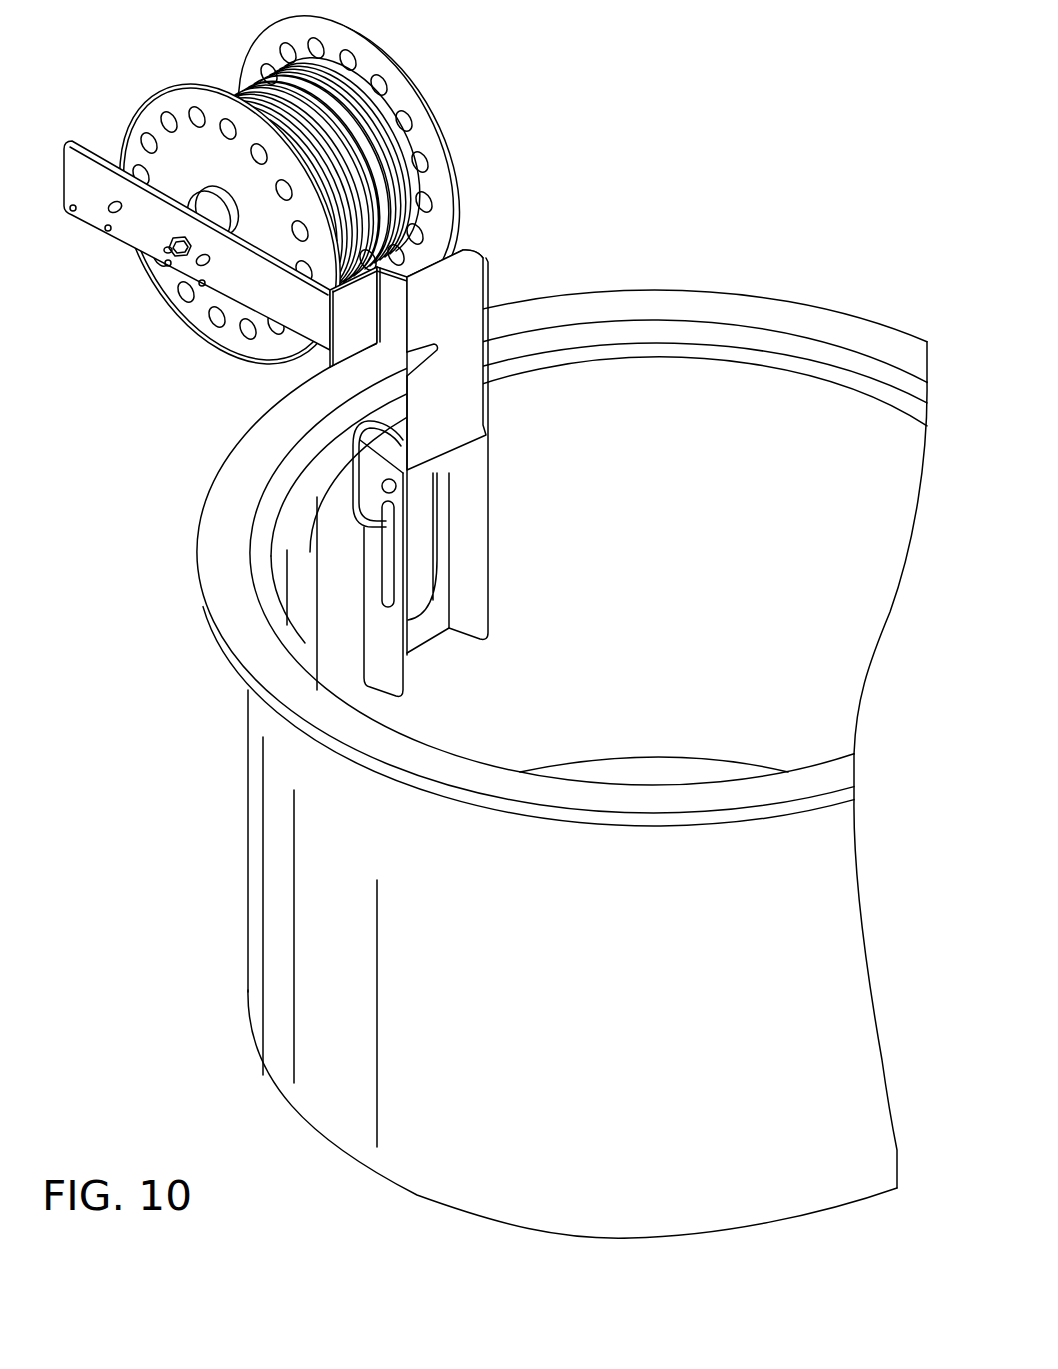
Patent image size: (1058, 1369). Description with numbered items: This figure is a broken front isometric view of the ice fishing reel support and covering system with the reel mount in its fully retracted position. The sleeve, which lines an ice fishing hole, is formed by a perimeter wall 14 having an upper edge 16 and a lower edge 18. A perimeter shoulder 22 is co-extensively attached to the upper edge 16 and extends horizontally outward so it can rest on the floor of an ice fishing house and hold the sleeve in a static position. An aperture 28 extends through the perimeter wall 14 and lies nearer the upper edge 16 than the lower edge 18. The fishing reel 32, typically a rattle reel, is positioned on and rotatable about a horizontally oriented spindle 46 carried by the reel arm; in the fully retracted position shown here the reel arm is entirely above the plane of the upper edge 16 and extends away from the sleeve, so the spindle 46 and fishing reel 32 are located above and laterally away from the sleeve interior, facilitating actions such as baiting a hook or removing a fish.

The perimeter wall 14 is at (247, 852).
The upper edge 16 is at (740, 298).
The lower edge 18 is at (418, 1194).
The perimeter shoulder 22 is at (850, 318).
The aperture 28 is at (403, 493).
The fishing reel 32 is at (471, 96).
The spindle 46 is at (168, 254).